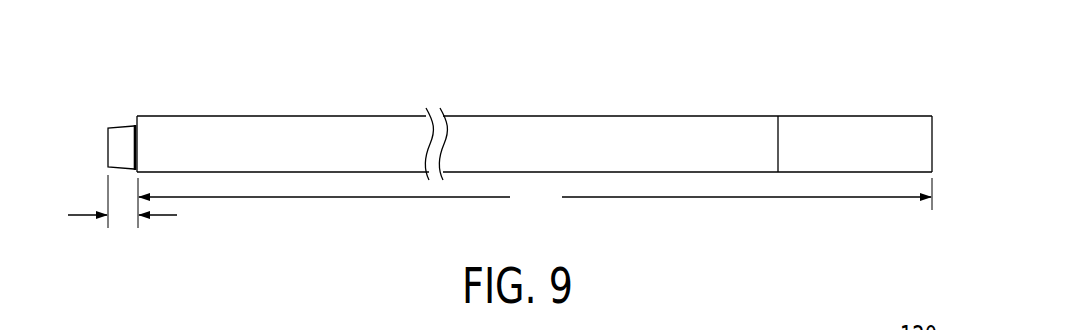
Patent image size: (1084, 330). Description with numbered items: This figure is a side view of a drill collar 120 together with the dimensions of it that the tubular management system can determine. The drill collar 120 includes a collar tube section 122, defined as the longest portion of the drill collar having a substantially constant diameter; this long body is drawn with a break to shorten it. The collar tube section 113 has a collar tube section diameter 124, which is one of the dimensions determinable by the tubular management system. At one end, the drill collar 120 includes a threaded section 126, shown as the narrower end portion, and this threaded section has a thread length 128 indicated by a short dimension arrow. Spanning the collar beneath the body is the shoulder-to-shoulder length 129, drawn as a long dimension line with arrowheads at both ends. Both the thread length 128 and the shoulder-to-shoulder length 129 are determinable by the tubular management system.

The drill collar 120 is at (507, 99).
The collar tube section 122 is at (534, 99).
The collar tube section 113 is at (678, 130).
The collar tube section diameter 124 is at (778, 145).
The threaded section 126 is at (107, 102).
The thread length 128 is at (163, 215).
The shoulder-to-shoulder length 129 is at (535, 203).